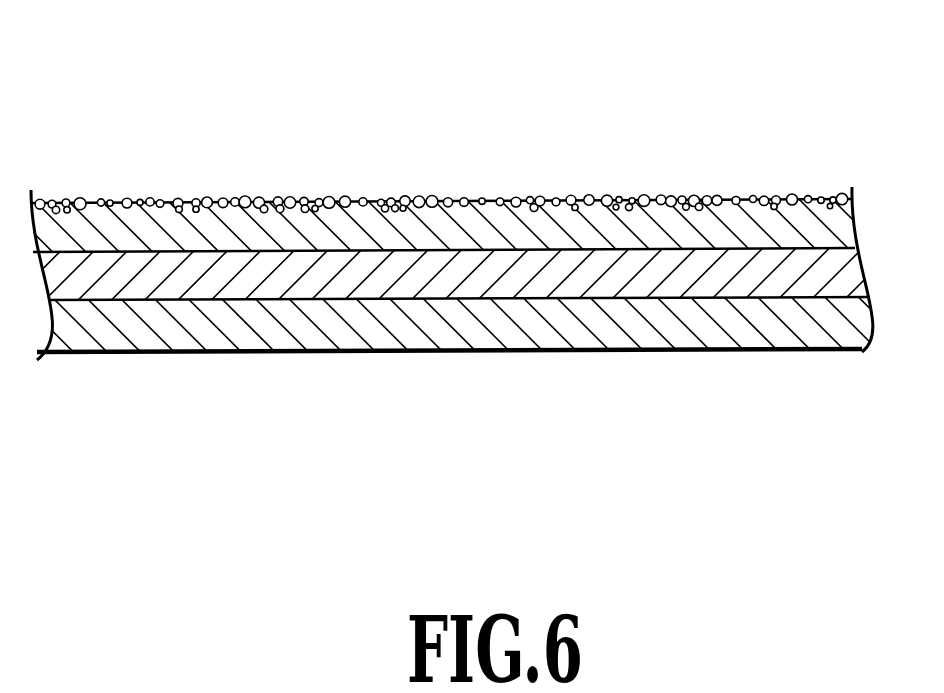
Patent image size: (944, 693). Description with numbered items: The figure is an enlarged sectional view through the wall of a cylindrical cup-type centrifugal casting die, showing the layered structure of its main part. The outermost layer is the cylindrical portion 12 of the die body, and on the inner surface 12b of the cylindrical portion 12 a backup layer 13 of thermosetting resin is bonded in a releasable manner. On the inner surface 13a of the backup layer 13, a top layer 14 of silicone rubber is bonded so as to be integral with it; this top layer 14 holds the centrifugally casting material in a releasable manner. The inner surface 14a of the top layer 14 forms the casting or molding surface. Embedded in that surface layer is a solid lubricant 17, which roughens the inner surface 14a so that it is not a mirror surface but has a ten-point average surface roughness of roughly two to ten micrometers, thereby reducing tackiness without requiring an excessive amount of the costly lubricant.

The cylindrical portion 12 is at (257, 330).
The inner surface of the cylindrical portion 12b is at (158, 280).
The backup layer 13 is at (476, 290).
The inner surface of the backup layer 13a is at (270, 237).
The top layer 14 is at (750, 235).
The inner surface of the top layer 14a is at (655, 184).
The solid lubricant 17 is at (458, 202).